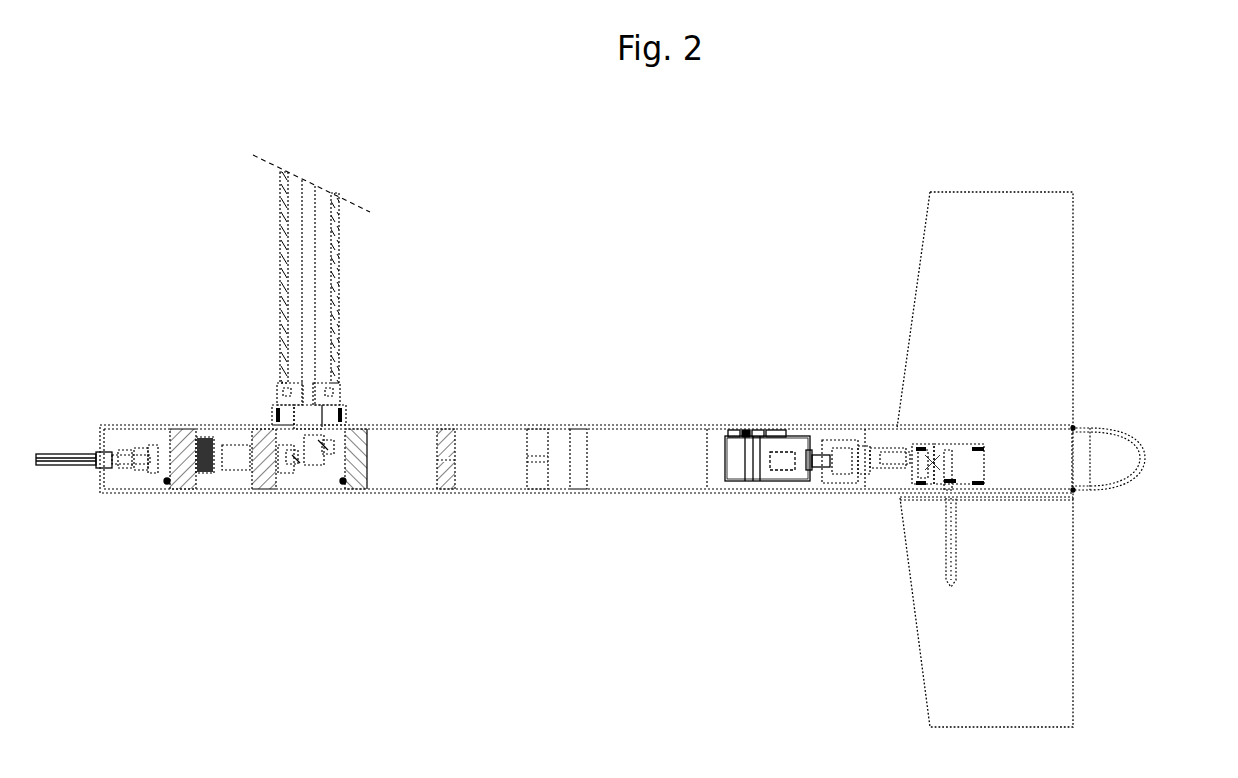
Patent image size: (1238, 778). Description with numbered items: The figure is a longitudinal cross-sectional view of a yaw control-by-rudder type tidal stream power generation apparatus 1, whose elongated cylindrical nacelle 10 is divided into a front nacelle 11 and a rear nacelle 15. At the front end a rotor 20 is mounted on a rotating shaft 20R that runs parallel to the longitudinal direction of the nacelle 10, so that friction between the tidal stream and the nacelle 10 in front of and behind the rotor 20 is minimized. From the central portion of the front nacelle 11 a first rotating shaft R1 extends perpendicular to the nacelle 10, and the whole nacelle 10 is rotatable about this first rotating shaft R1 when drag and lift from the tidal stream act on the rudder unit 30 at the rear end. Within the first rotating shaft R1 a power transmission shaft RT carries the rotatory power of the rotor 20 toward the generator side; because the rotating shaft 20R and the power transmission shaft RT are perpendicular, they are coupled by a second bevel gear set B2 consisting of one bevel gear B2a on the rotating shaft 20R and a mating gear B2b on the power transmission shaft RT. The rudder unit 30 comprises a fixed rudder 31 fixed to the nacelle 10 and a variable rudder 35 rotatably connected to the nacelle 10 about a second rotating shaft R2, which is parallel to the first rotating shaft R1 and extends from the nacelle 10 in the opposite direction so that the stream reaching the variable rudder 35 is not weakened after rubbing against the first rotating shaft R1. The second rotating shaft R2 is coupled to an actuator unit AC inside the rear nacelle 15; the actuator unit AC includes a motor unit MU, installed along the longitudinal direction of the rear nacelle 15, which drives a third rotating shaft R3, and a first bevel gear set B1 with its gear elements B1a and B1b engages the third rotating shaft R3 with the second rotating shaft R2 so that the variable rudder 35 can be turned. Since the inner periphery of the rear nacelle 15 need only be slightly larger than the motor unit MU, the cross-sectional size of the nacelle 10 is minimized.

The yaw control-by-rudder type tidal stream power generation apparatus 1 is at (170, 122).
The rotor 20 is at (65, 446).
The rotating shaft of the rotor 20R is at (67, 470).
The power transmission shaft RT is at (313, 273).
The first rotating shaft R1 is at (336, 318).
The second bevel gear set B2 is at (350, 546).
The 2a-th bevel gear B2a is at (287, 470).
The 2b-th gear B2b is at (327, 450).
The nacelle 10 is at (789, 309).
The front nacelle 11 is at (630, 427).
The rear nacelle 15 is at (813, 425).
The motor unit MU is at (776, 480).
The third rotating shaft R3 is at (907, 457).
The actuator unit AC is at (909, 437).
The first bevel gear set B1 is at (786, 519).
The first bevel gear set component B1a is at (940, 471).
The first bevel gear set component B1b is at (912, 472).
The second rotating shaft R2 is at (947, 548).
The rudder unit 30 is at (1183, 385).
The fixed rudder 31 is at (1065, 391).
The variable rudder 35 is at (1065, 532).